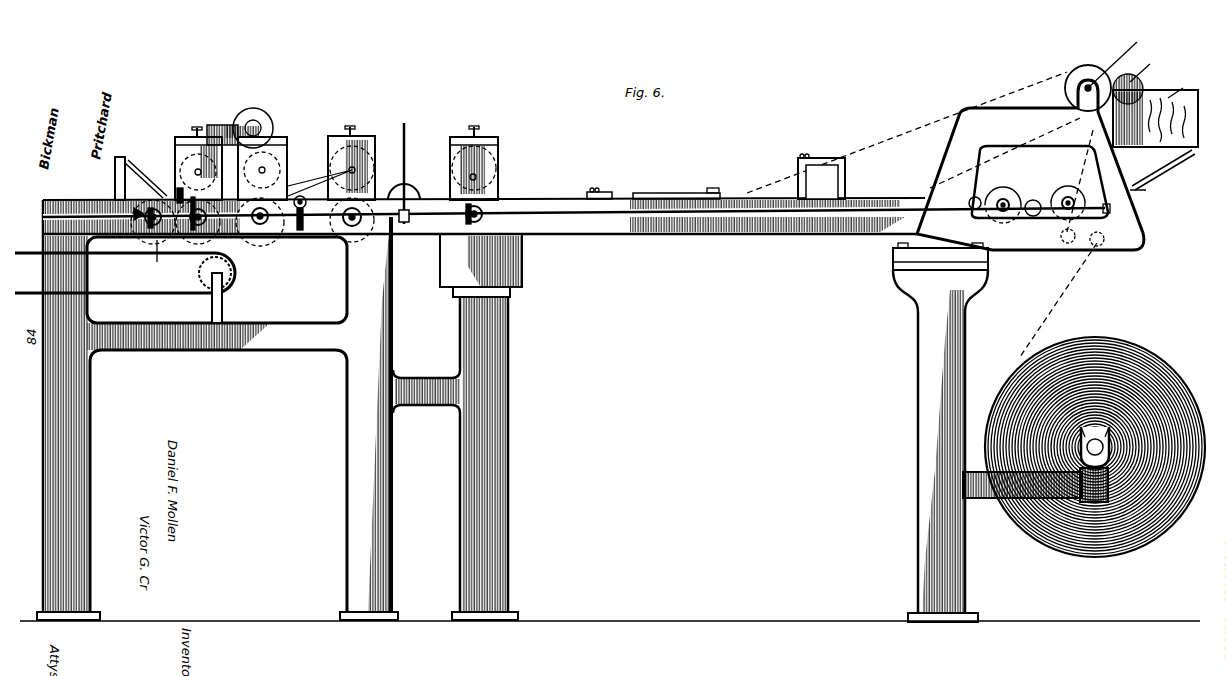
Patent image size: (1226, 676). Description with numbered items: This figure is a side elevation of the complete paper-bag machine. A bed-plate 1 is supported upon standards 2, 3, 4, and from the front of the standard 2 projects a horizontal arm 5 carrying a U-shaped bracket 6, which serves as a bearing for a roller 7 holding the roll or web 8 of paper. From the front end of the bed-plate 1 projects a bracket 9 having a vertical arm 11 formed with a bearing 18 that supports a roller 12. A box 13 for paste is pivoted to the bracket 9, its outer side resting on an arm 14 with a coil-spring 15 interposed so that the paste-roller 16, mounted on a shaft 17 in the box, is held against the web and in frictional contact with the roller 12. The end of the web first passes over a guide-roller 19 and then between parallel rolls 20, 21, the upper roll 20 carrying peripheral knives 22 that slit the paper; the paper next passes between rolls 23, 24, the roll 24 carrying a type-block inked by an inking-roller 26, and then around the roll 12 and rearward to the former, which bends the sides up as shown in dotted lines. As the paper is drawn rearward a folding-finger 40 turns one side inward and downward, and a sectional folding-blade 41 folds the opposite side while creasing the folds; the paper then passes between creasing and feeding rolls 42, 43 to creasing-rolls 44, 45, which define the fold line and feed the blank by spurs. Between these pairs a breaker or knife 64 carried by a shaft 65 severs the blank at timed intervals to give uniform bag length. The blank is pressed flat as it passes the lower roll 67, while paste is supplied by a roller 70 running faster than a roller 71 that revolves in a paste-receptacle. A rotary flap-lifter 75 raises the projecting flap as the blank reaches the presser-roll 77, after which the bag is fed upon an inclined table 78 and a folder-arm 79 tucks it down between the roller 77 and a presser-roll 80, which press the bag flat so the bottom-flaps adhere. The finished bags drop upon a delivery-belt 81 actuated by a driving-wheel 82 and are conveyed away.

The bed-plate 1 is at (673, 235).
The standard 2 is at (928, 373).
The standard 3 is at (465, 443).
The standard 4 is at (90, 422).
The horizontal arm 5 is at (987, 499).
The U-shaped bracket 6 is at (1085, 443).
The roller 7 is at (1030, 525).
The roll or web of paper 8 is at (1120, 555).
The bracket 9 is at (1030, 165).
The vertical arm 11 is at (1148, 66).
The roller 12 is at (1088, 65).
The box 13 is at (1155, 118).
The arm 14 is at (1160, 172).
The coil-spring 15 is at (1180, 152).
The paste-roller 16 is at (1140, 90).
The shaft 17 is at (1183, 84).
The bearing 18 is at (1121, 57).
The guide-roller 19 is at (1104, 247).
The upper roll 20 is at (1082, 196).
The lower roll 21 is at (1064, 246).
The peripheral knife 22 is at (1060, 188).
The roll 23 is at (1036, 199).
The roll 24 is at (1001, 188).
The inking-roller 26 is at (977, 196).
The folding-finger 40 is at (666, 193).
The sectional folding-blade 41 is at (604, 190).
The creasing and feeding roll 42 is at (502, 170).
The creasing and feeding roll 43 is at (528, 238).
The creasing-roll 44 is at (366, 130).
The creasing-roll 45 is at (347, 248).
The breaker or knife 64 is at (408, 153).
The shaft 65 is at (760, 230).
The roll 67 is at (268, 236).
The roller 70 is at (268, 116).
The roller 71 is at (220, 124).
The rotary flap-lifter 75 is at (240, 189).
The presser-roll 77 is at (240, 243).
The inclined table 78 is at (128, 171).
The folder-arm 79 is at (177, 192).
The presser-roll 80 is at (166, 257).
The delivery-belt 81 is at (125, 273).
The driving-wheel 82 is at (232, 284).